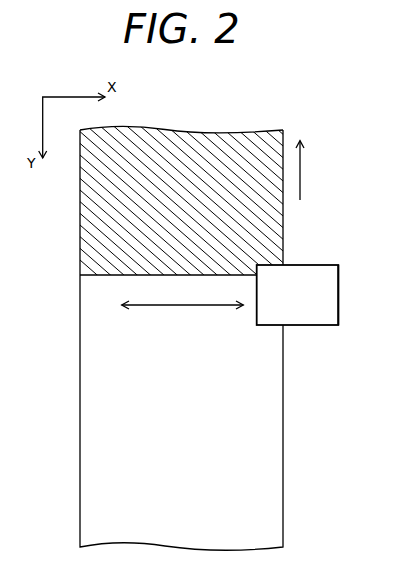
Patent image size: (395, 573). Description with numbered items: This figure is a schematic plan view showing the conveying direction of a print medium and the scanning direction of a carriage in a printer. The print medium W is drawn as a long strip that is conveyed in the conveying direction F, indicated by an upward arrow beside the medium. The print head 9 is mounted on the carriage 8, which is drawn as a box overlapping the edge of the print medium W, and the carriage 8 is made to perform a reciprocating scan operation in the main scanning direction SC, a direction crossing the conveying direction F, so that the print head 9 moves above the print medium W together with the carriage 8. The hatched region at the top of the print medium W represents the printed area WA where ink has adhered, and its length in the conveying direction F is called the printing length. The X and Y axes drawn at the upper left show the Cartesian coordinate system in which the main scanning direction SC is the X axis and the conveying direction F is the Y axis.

The carriage 8 is at (311, 326).
The print head 9 is at (330, 318).
The print medium W is at (283, 432).
The printed area WA is at (80, 249).
The main scanning direction SC is at (183, 314).
The conveying direction F is at (305, 170).